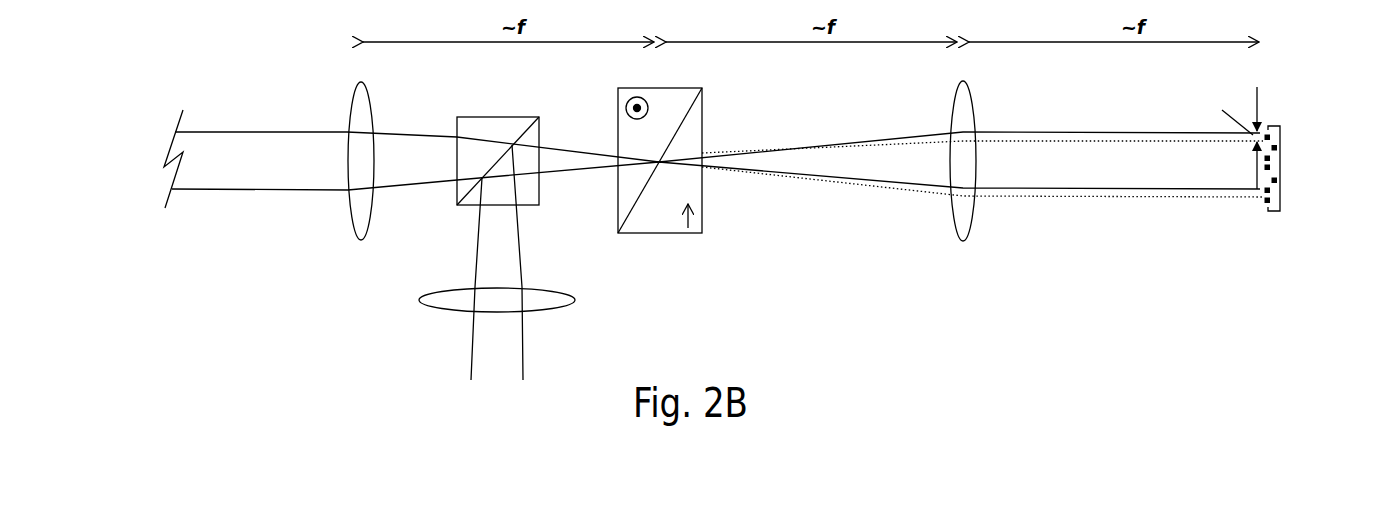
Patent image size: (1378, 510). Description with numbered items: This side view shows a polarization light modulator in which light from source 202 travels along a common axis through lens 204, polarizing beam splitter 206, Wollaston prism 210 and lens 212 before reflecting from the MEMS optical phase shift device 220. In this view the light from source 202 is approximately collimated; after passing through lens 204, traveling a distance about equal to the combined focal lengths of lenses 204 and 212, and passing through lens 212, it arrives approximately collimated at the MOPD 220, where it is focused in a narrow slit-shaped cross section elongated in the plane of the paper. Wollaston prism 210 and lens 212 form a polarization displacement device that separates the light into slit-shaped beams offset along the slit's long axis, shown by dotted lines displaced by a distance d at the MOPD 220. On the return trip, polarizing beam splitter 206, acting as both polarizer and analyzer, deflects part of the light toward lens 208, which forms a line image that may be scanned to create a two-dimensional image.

The source 202 is at (107, 180).
The lens 204 is at (345, 217).
The polarizing beam splitter 206 is at (452, 212).
The lens 208 is at (417, 313).
The Wollaston prism 210 is at (713, 217).
The lens 212 is at (948, 227).
The MEMS optical phase shift device (MOPD) 220 is at (1290, 187).